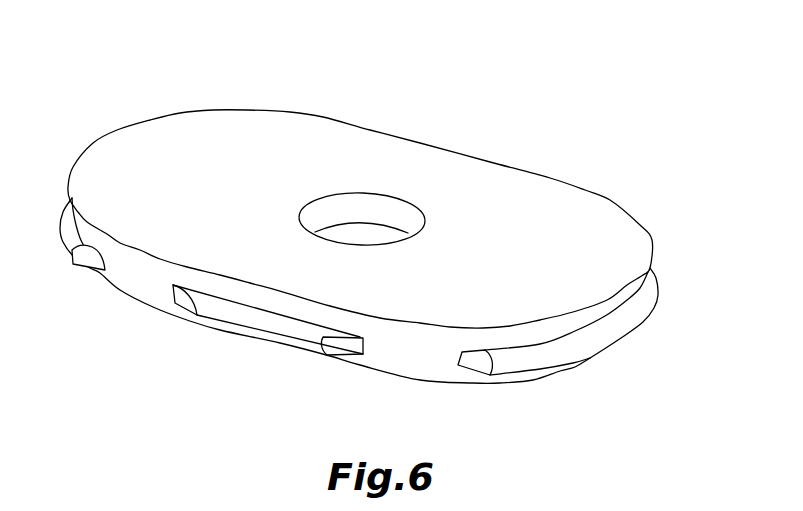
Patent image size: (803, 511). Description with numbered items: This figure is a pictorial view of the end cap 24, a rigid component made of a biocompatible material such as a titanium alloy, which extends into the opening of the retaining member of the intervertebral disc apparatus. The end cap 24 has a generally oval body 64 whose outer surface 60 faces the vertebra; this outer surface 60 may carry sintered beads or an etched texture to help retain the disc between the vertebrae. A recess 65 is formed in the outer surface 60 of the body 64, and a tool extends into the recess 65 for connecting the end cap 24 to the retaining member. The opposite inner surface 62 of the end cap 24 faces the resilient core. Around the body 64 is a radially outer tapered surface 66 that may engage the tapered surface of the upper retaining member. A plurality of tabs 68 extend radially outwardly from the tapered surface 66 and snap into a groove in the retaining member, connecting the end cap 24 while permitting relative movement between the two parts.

The end cap 24 is at (645, 187).
The outer surface 60 is at (218, 153).
The inner surface 62 is at (443, 383).
The body 64 is at (472, 177).
The recess 65 is at (373, 210).
The radially outer tapered surface 66 is at (390, 348).
The tabs 68 is at (72, 240).